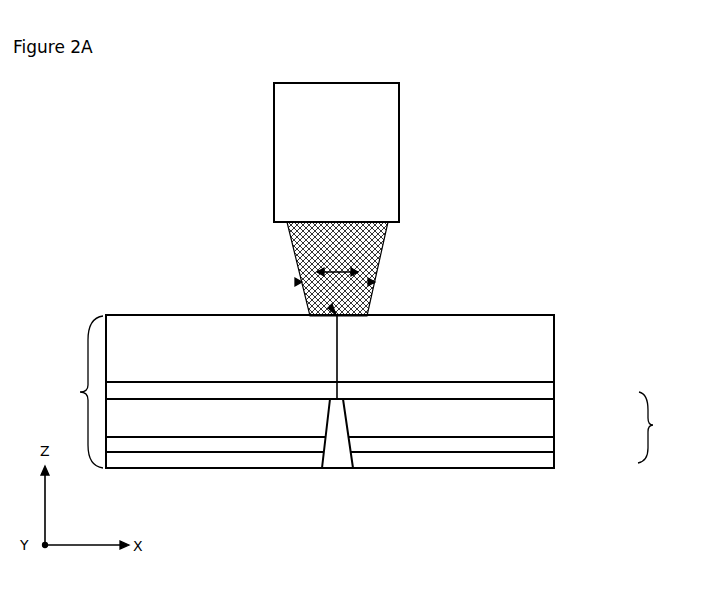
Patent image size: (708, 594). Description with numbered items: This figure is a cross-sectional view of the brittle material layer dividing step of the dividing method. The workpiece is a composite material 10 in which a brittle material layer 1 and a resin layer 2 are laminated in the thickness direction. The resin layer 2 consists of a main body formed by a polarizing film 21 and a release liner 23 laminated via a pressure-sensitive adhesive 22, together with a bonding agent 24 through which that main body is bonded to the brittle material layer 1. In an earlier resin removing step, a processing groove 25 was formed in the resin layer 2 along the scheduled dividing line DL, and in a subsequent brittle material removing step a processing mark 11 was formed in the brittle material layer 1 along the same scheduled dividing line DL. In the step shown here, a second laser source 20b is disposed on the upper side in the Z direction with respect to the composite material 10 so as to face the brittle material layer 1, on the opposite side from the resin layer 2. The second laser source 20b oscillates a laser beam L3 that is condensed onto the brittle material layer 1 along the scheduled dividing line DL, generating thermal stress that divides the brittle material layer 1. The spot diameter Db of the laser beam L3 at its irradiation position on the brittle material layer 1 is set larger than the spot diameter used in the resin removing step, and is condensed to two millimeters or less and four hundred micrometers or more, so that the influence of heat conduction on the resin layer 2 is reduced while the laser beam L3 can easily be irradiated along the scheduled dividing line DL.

The second laser source 20b is at (373, 153).
The laser beam L3 is at (383, 286).
The scheduled dividing line DL is at (297, 284).
The spot diameter Db is at (337, 264).
The composite material 10 is at (302, 391).
The brittle material layer 1 is at (546, 352).
The processing mark 11 is at (340, 338).
The bonding agent 24 is at (550, 393).
The polarizing film 21 is at (550, 420).
The pressure-sensitive adhesive 22 is at (550, 446).
The release liner 23 is at (550, 464).
The resin layer 2 is at (652, 427).
The processing groove 25 is at (337, 452).